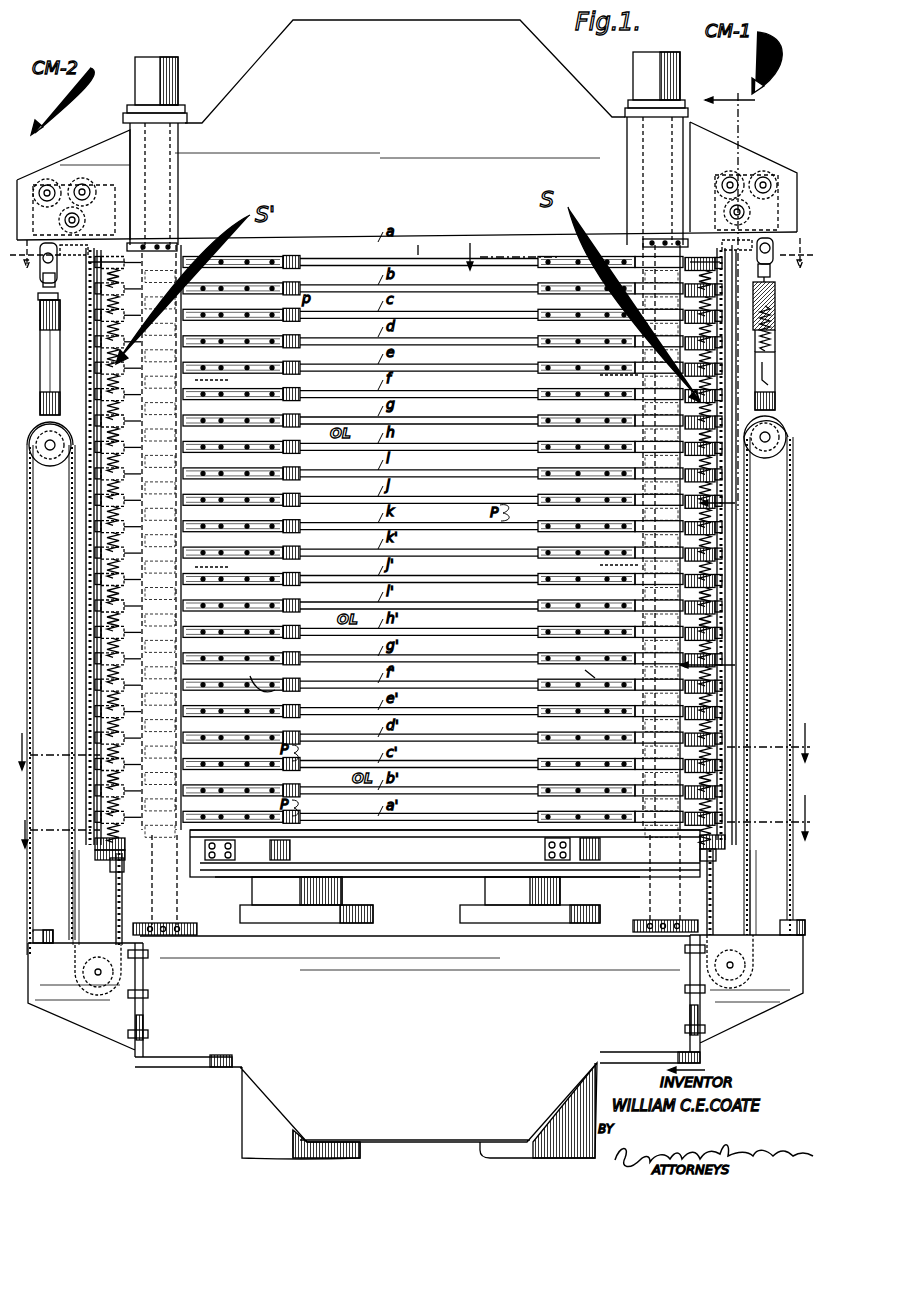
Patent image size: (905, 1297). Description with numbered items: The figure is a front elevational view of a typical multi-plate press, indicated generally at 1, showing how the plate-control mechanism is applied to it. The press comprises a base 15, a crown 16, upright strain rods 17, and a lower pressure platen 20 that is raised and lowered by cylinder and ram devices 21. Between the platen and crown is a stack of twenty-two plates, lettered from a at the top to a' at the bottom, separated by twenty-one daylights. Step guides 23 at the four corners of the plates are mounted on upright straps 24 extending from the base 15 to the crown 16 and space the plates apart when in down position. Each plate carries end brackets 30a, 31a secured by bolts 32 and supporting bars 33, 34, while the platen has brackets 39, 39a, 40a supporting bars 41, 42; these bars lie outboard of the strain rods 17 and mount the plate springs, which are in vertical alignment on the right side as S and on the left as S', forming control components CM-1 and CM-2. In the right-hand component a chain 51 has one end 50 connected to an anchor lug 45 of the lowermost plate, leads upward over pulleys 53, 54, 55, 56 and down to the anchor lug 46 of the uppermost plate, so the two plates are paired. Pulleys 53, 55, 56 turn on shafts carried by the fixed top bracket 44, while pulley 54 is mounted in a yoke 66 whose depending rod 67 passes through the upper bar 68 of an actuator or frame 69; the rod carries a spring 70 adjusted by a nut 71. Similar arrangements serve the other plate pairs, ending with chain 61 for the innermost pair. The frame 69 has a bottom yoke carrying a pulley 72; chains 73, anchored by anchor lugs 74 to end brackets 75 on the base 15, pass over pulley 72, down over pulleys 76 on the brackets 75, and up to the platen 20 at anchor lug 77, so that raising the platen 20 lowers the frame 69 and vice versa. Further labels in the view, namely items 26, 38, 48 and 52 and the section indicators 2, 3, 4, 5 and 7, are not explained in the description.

The press 1 is at (418, 245).
The section line 2 is at (412, 251).
The section line 3 is at (740, 302).
The section line 4 is at (715, 861).
The section line 5 is at (412, 743).
The section line 7 is at (410, 821).
The base 15 is at (425, 1030).
The crown 16 is at (407, 130).
The upright strain rods 17 is at (178, 175).
The lower pressure platen 20 is at (388, 862).
The cylinder and ram devices 21 is at (460, 913).
The step guides 23 is at (417, 472).
The upright straps 24 is at (185, 882).
The platens 26 is at (408, 550).
The end bracket 30a is at (602, 707).
The end bracket 31a is at (285, 700).
The bolts 32 is at (420, 676).
The bar 33 is at (691, 494).
The bar 34 is at (113, 773).
The end blocks 38 is at (150, 245).
The bracket 39 is at (136, 305).
The bracket 39a is at (590, 882).
The bracket 40a is at (164, 880).
The bar 41 is at (680, 840).
The bar 42 is at (126, 872).
The fixed top bracket 44 is at (85, 152).
The anchor lug 45 is at (90, 840).
The anchor lug 46 is at (737, 270).
The springs 48 is at (105, 283).
The end of chain 50 is at (95, 822).
The chain 51 is at (95, 780).
The link 52 is at (406, 245).
The pulley 53 is at (88, 210).
The pulley 54 is at (48, 243).
The pulley 55 is at (44, 183).
The pulley 56 is at (86, 182).
The chain 61 is at (86, 520).
The yoke 66 is at (43, 274).
The depending rod 67 is at (38, 294).
The upper bar 68 is at (775, 302).
The actuator or frame 69 is at (40, 337).
The spring 70 is at (775, 328).
The nut 71 is at (782, 374).
The pulley 72 is at (40, 435).
The chains 73 is at (35, 888).
The anchor lugs 74 is at (45, 930).
The end brackets 75 is at (60, 972).
The pulleys 76 is at (98, 955).
The anchor lug 77 is at (715, 862).